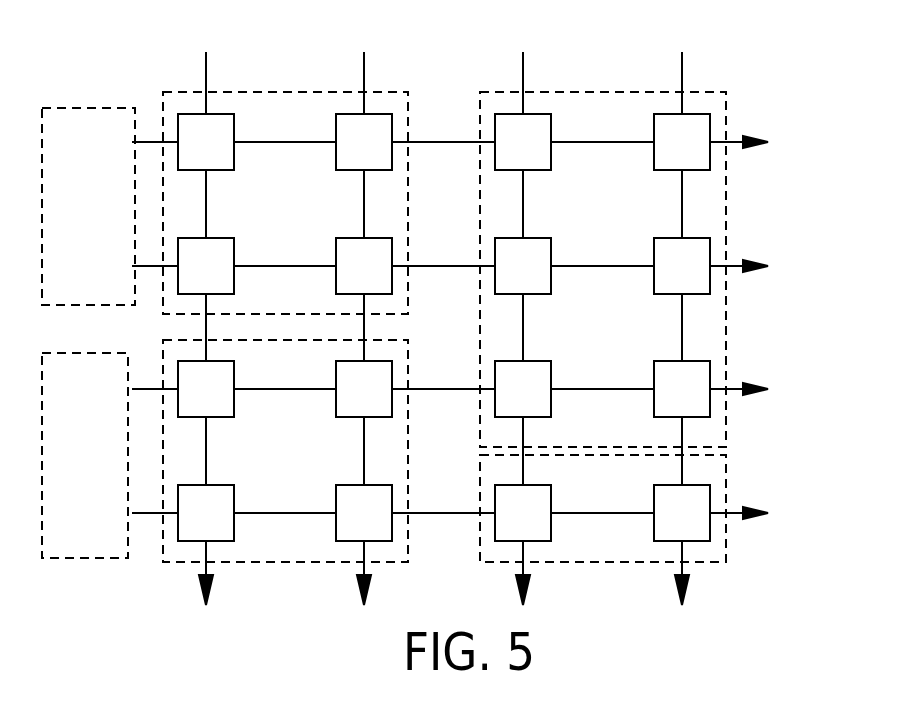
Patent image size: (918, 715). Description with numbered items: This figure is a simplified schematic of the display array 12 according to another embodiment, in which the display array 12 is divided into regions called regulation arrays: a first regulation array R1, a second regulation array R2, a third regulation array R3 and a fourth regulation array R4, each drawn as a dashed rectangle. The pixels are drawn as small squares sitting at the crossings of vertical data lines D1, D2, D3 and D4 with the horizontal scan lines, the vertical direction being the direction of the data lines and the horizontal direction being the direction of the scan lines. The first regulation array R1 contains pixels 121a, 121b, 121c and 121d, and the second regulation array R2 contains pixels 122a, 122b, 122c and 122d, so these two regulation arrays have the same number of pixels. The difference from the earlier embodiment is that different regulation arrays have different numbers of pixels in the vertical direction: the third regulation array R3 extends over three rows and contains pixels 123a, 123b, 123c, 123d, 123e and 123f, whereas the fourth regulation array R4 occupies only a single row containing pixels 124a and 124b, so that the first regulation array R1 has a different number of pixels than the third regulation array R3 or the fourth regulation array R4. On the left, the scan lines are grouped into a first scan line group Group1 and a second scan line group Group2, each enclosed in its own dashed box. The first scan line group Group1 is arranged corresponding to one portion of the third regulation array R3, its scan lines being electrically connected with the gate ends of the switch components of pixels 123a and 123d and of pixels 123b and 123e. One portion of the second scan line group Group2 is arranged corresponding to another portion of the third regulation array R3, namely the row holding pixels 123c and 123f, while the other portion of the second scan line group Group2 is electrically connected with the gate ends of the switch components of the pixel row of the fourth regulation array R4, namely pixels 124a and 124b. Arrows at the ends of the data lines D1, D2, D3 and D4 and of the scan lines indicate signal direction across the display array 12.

The display array 12 is at (779, 332).
The pixel 121a is at (222, 170).
The pixel 121b is at (222, 238).
The pixel 121c is at (336, 128).
The pixel 121d is at (336, 277).
The pixel 122a is at (222, 417).
The pixel 122b is at (222, 485).
The pixel 122c is at (336, 375).
The pixel 122d is at (336, 524).
The pixel 123a is at (540, 170).
The pixel 123b is at (540, 238).
The pixel 123c is at (540, 417).
The pixel 123d is at (654, 128).
The pixel 123e is at (654, 277).
The pixel 123f is at (654, 377).
The pixel 124a is at (540, 485).
The pixel 124b is at (654, 525).
The first regulation array R1 is at (183, 92).
The second regulation array R2 is at (185, 563).
The third regulation array R3 is at (722, 92).
The fourth regulation array R4 is at (705, 563).
The first data line D1 is at (208, 312).
The second data line D2 is at (365, 312).
The third data line D3 is at (525, 312).
The fourth data line D4 is at (681, 312).
The first scan line group Group1 is at (88, 107).
The second scan line group Group2 is at (63, 560).